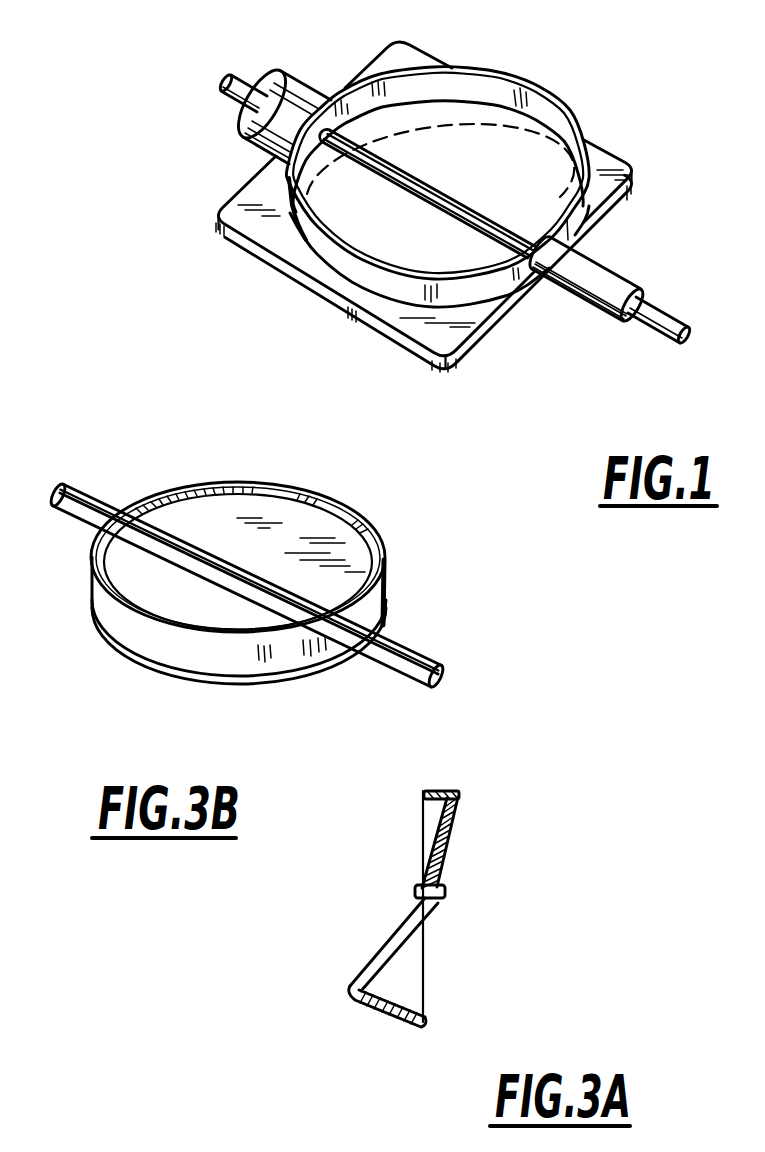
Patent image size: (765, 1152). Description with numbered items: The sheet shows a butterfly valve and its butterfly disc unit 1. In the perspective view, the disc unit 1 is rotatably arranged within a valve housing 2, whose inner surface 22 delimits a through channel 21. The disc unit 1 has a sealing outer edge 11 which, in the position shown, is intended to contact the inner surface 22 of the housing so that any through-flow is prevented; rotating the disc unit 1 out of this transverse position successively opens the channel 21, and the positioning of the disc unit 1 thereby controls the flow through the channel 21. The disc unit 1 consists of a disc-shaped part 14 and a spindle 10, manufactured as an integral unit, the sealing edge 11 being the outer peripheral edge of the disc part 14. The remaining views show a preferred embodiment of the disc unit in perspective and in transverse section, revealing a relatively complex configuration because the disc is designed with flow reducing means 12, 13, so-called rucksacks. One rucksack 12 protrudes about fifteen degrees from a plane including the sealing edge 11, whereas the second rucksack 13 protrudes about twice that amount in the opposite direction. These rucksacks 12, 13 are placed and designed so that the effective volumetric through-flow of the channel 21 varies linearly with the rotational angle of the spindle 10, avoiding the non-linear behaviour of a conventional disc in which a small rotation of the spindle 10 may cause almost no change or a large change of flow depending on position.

In FIG. 1, the butterfly disc unit 1 is at (409, 192).
In FIG. 3B, the butterfly disc unit 1 is at (262, 475).
In FIG. 1, the valve housing 2 is at (588, 130).
In FIG. 1, the spindle 10 is at (653, 325).
In FIG. 3B, the spindle 10 is at (400, 653).
In FIG. 3A, the spindle 10 is at (440, 893).
In FIG. 1, the sealing outer edge 11 is at (543, 127).
In FIG. 3B, the sealing outer edge 11 is at (221, 677).
In FIG. 3A, the sealing outer edge 11 is at (428, 785).
In FIG. 3B, the flow reducing means (rucksack) 12 is at (277, 513).
In FIG. 3A, the flow reducing means (rucksack) 12 is at (463, 784).
In FIG. 3B, the flow reducing means (rucksack) 13 is at (175, 620).
In FIG. 3A, the flow reducing means (rucksack) 13 is at (354, 1001).
In FIG. 1, the disc-shaped part 14 is at (543, 208).
In FIG. 3B, the disc-shaped part 14 is at (327, 533).
In FIG. 3A, the disc-shaped part 14 is at (447, 840).
In FIG. 1, the through channel 21 is at (462, 158).
In FIG. 1, the inner surface 22 is at (474, 82).